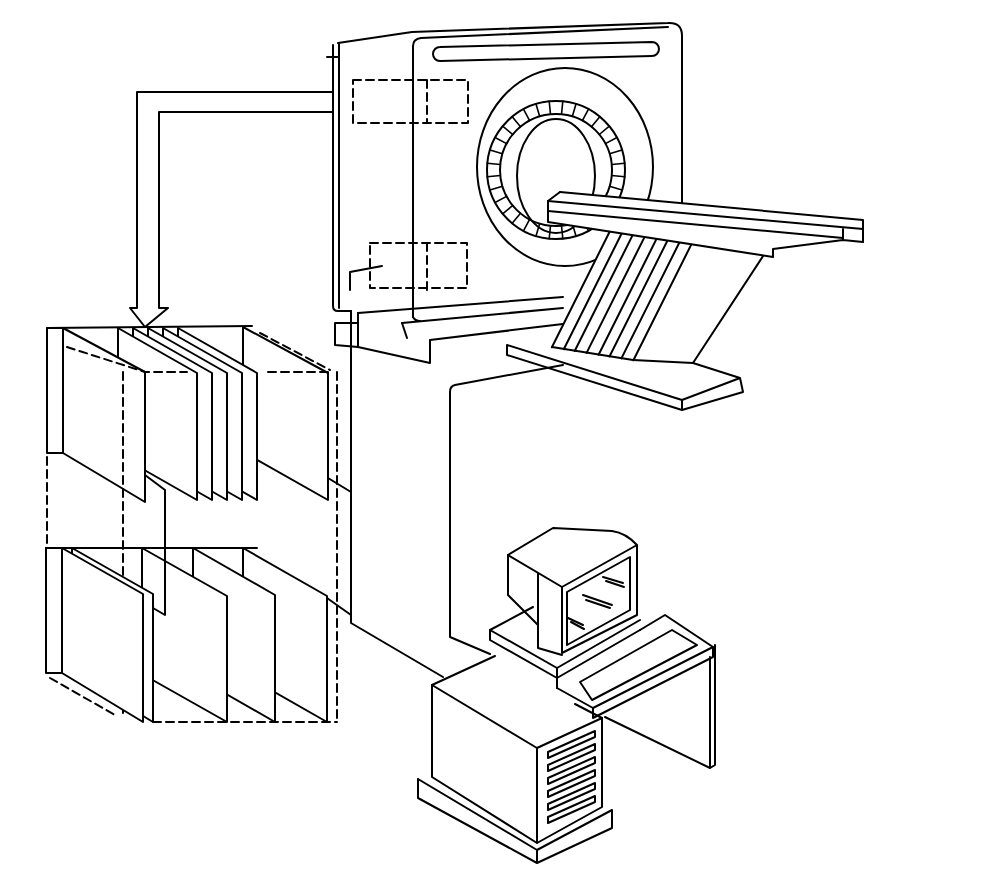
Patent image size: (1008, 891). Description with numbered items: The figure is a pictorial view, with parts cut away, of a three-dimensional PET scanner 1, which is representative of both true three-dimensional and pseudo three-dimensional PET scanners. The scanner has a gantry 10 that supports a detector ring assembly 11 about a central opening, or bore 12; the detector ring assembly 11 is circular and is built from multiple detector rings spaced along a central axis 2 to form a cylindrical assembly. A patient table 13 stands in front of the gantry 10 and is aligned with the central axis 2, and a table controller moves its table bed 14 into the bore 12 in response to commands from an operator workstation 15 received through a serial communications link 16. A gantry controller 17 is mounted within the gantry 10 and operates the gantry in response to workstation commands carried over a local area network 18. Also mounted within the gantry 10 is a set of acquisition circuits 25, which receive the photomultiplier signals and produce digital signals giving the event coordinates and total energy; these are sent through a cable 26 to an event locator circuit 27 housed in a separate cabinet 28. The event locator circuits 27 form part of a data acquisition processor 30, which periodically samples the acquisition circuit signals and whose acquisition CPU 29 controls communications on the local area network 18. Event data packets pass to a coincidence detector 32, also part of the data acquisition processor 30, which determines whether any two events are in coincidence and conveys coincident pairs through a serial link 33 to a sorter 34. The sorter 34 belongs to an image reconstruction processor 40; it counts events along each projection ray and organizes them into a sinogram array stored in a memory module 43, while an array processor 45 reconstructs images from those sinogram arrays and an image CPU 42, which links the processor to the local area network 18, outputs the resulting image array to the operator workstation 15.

The 3D PET scanner 1 is at (254, 55).
The central axis 2 is at (786, 201).
The gantry 10 is at (686, 90).
The detector ring assembly 11 is at (622, 133).
The bore 12 is at (567, 172).
The patient table 13 is at (727, 321).
The table bed 14 is at (806, 227).
The operator workstation 15 is at (597, 519).
The serial communications link 16 is at (455, 462).
The gantry controller 17 is at (370, 243).
The local area network 18 is at (353, 516).
The acquisition circuits 25 is at (355, 78).
The cable 26 is at (162, 279).
The event locator circuit 27 is at (151, 434).
The cabinet 28 is at (200, 726).
The acquisition CPU 29 is at (272, 434).
The data acquisition processor 30 is at (192, 501).
The coincidence detector 32 is at (66, 422).
The serial link 33 is at (166, 525).
The sorter 34 is at (74, 642).
The image reconstruction processor 40 is at (191, 631).
The image CPU 42 is at (284, 662).
The memory module 43 is at (168, 662).
The array processor 45 is at (233, 662).